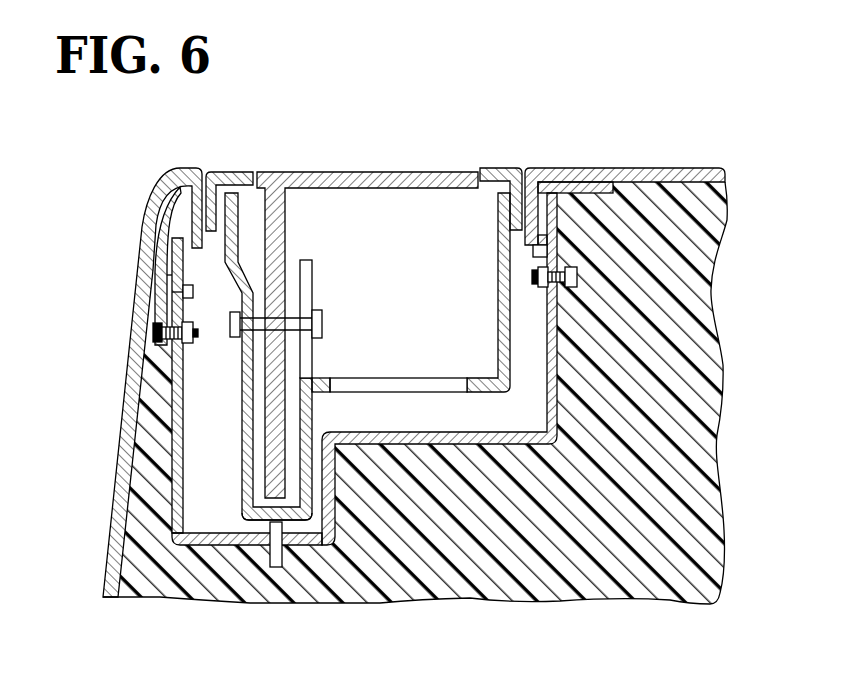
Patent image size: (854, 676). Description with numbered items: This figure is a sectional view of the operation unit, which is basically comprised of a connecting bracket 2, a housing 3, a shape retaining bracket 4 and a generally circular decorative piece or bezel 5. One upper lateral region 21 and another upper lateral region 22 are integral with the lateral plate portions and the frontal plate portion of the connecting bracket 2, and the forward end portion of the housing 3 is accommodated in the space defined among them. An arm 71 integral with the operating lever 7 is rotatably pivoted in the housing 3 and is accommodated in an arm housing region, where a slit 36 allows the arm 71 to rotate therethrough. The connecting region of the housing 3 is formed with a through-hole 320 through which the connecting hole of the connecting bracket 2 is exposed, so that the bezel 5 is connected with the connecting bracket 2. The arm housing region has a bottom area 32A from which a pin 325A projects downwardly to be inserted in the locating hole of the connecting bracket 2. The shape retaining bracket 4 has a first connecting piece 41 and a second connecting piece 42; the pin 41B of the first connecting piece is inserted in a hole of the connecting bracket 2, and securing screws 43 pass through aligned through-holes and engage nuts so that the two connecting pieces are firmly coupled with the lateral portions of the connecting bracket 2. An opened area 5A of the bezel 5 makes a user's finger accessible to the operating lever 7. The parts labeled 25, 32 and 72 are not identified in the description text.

The connecting bracket 2 is at (462, 445).
The upper lateral region 21 is at (543, 340).
The upper lateral region 22 is at (185, 487).
The bottom wall 25 is at (223, 543).
The housing 3 is at (497, 228).
The channel member 32 is at (242, 245).
The bottom area 32A is at (260, 523).
The through-hole 320 is at (405, 380).
The pin 325A is at (277, 550).
The slit 36 is at (297, 245).
The shape retaining bracket 4 is at (148, 213).
The first connecting piece 41 is at (584, 195).
The pin 41B is at (540, 245).
The second connecting piece 42 is at (152, 316).
The securing screw 43 is at (140, 335).
The bezel 5 is at (214, 195).
The opened area 5A is at (446, 267).
The operating lever 7 is at (400, 170).
The arm 71 is at (282, 223).
The fastening pin 72 is at (293, 324).